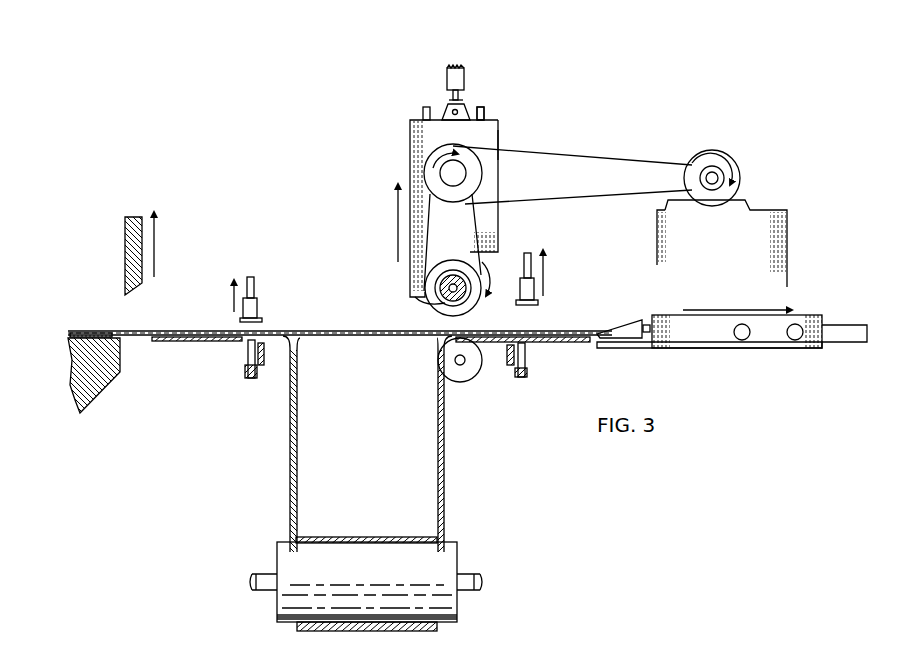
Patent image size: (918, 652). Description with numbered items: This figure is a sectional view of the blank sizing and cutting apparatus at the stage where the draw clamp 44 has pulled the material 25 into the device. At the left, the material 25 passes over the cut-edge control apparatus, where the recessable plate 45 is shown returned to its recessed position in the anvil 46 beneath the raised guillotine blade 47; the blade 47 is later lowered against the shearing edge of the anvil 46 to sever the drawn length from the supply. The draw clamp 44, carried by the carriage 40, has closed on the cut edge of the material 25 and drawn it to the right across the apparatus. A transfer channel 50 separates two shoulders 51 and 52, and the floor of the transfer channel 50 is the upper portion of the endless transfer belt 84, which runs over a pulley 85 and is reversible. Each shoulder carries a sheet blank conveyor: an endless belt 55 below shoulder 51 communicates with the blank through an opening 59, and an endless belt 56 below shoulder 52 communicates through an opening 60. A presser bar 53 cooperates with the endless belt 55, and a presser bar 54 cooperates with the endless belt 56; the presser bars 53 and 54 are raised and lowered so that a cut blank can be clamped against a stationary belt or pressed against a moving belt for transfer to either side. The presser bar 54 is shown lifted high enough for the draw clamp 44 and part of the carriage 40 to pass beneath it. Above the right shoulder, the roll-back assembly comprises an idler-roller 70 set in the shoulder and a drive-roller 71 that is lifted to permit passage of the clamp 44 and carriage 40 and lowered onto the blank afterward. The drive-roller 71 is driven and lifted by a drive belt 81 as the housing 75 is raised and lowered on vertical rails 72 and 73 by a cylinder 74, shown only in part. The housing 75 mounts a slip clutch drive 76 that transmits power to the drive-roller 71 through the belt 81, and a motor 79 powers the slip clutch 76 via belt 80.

The material 25 is at (86, 331).
The carriage 40 is at (754, 350).
The draw clamp 44 is at (612, 332).
The recessable plate 45 is at (98, 333).
The anvil 46 is at (115, 378).
The guillotine blade 47 is at (136, 286).
The transfer channel 50 is at (380, 509).
The shoulder 51 is at (196, 342).
The shoulder 52 is at (564, 342).
The presser bar 53 is at (258, 310).
The presser bar 54 is at (496, 293).
The endless belt 55 is at (248, 376).
The endless belt 56 is at (518, 370).
The opening 59 is at (254, 352).
The opening 60 is at (530, 352).
The idler-roller 70 is at (460, 382).
The drive-roller 71 is at (438, 317).
The vertical rail 72 is at (414, 118).
The vertical rail 73 is at (484, 118).
The cylinder 74 is at (466, 68).
The housing 75 is at (498, 141).
The slip clutch drive 76 is at (424, 178).
The motor 79 is at (742, 140).
The belt 80 is at (612, 159).
The drive belt 81 is at (478, 231).
The endless transfer belt 84 is at (332, 538).
The pulley 85 is at (276, 554).